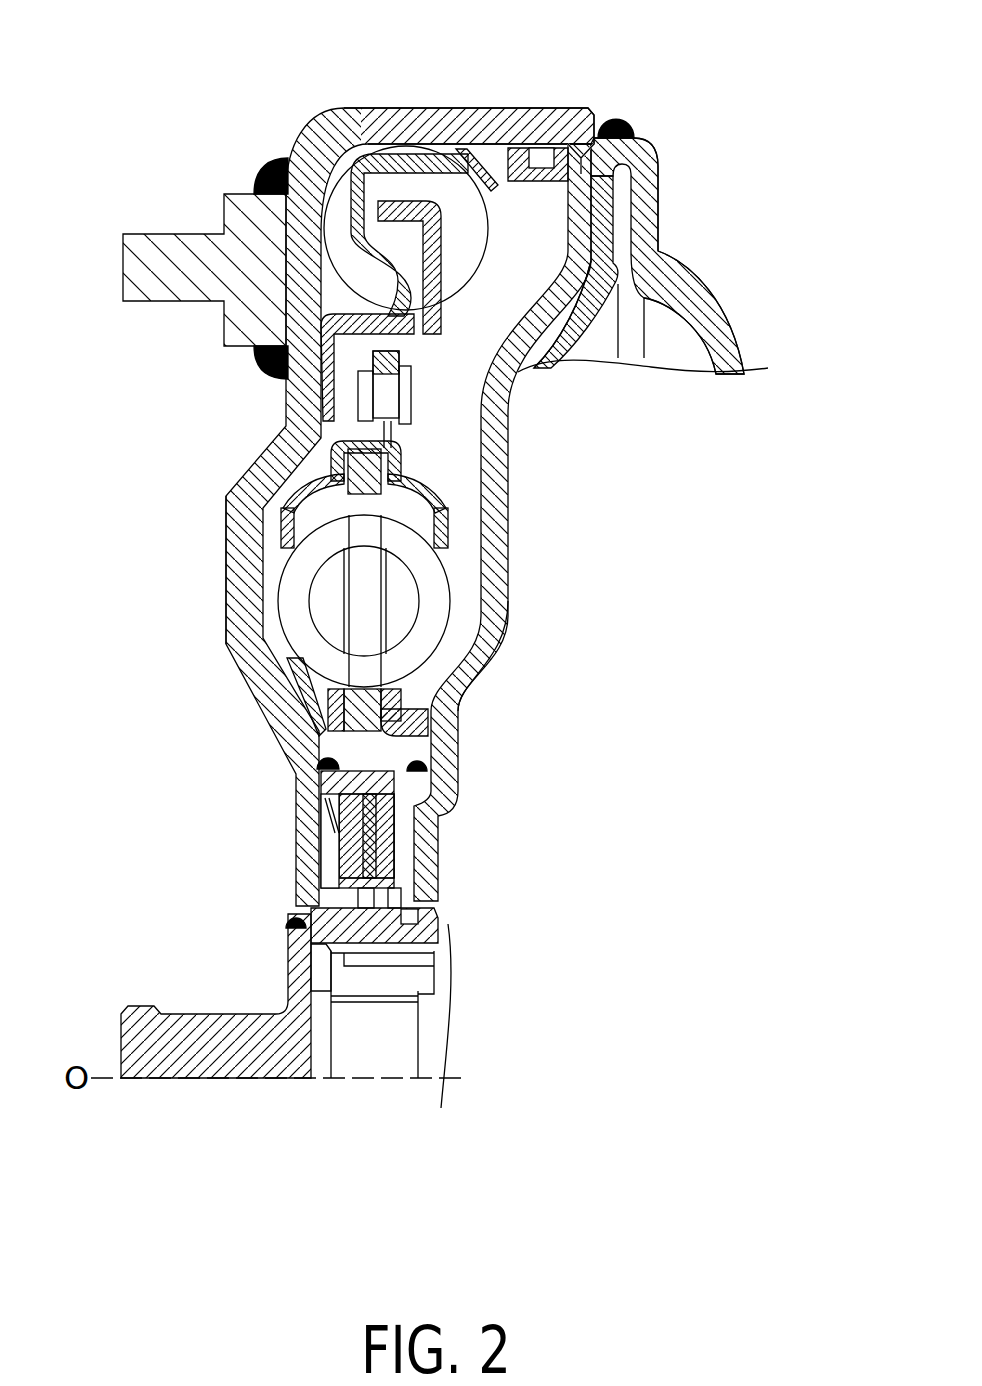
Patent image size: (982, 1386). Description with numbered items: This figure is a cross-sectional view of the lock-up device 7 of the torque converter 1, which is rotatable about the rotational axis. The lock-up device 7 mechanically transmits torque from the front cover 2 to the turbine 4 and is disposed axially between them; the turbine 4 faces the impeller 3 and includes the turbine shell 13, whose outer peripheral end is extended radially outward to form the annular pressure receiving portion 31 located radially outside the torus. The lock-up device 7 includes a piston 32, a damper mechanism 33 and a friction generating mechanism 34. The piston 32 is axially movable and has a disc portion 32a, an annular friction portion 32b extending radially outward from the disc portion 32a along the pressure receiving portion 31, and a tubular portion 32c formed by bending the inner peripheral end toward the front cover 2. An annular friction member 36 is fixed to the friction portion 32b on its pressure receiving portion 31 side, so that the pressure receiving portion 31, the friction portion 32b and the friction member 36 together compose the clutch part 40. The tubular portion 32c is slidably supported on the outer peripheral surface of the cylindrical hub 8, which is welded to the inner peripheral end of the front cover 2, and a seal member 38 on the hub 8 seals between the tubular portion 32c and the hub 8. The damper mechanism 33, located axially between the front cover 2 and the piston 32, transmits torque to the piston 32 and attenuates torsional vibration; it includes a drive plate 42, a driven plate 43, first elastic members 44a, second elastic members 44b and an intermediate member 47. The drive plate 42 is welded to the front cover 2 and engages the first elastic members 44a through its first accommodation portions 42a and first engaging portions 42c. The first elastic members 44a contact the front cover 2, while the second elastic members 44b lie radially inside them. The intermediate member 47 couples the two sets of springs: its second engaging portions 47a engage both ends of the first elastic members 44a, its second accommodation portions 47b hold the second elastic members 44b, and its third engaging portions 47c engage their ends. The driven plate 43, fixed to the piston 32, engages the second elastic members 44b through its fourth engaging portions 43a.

The torque converter 1 is at (739, 115).
The front cover 2 is at (210, 589).
The impeller 3 is at (725, 292).
The turbine 4 is at (628, 349).
The lock-up device 7 is at (505, 158).
The hub 8 is at (200, 1012).
The turbine shell 13 is at (552, 352).
The pressure receiving portion 31 is at (605, 215).
The piston 32 is at (522, 602).
The disc portion 32a is at (508, 640).
The friction portion 32b is at (612, 157).
The tubular portion 32c is at (385, 888).
The damper mechanism 33 is at (420, 126).
The friction generating mechanism 34 is at (412, 820).
The friction member 36 is at (598, 193).
The seal member 38 is at (413, 912).
The clutch part 40 is at (586, 128).
The drive plate 42 is at (300, 386).
The first accommodation portions 42a is at (503, 146).
The first engaging portions 42c is at (402, 165).
The driven plate 43 is at (402, 737).
The fourth engaging portions 43a is at (388, 577).
The first elastic members 44a is at (308, 146).
The second elastic members 44b is at (300, 578).
The intermediate member 47 is at (394, 345).
The second engaging portions 47a is at (395, 198).
The second accommodation portions 47b is at (400, 478).
The third engaging portions 47c is at (307, 667).